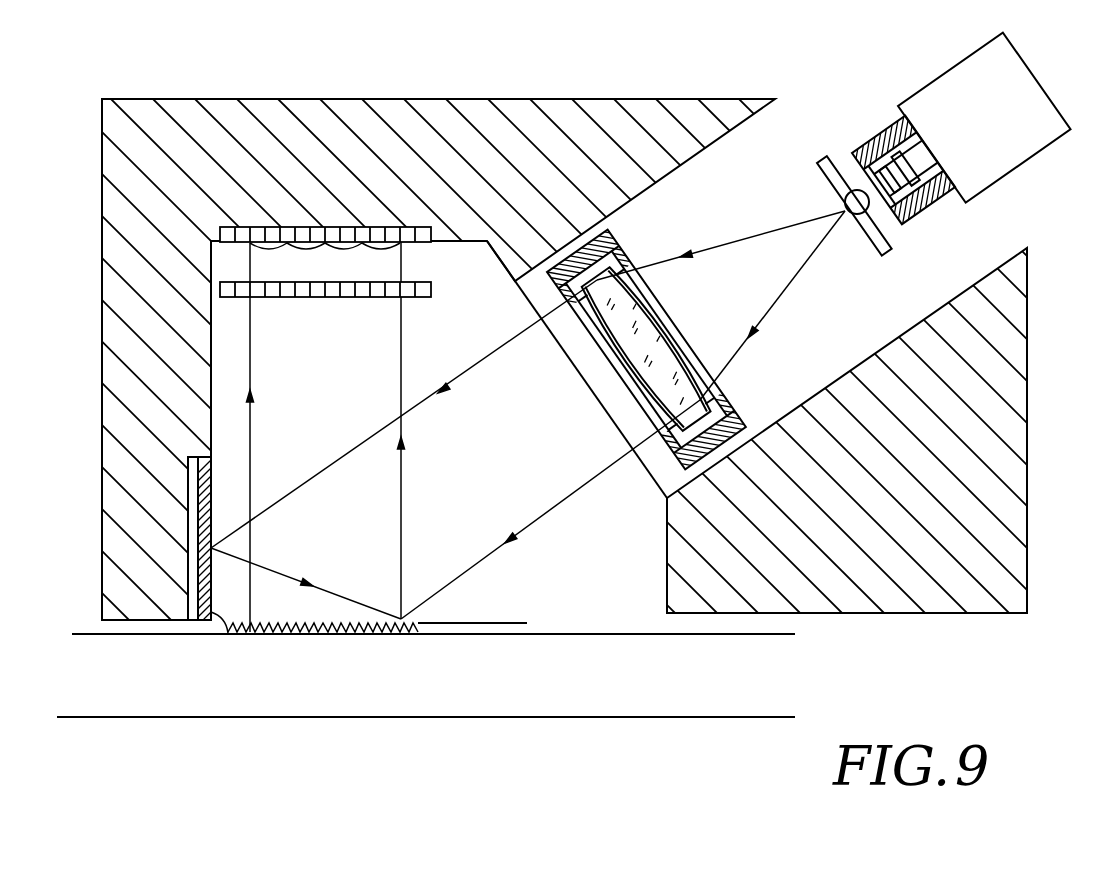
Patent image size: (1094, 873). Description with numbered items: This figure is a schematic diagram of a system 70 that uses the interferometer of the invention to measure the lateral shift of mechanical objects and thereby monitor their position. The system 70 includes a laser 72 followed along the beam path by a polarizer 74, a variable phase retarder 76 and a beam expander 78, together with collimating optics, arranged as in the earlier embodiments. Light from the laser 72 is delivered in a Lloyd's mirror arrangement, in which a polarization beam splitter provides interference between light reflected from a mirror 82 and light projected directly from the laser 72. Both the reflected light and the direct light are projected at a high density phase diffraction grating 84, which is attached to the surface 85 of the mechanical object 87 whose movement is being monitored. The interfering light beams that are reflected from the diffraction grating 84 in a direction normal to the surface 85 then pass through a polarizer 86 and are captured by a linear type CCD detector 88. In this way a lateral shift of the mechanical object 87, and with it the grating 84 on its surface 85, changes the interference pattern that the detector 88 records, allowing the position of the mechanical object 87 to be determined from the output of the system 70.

The system 70 is at (568, 80).
The laser 72 is at (975, 52).
The polarizer 74 is at (862, 152).
The variable phase retarder 76 is at (947, 202).
The beam expander 78 is at (818, 162).
The mirror 82 is at (198, 612).
The high density phase diffraction grating 84 is at (372, 634).
The surface 85 is at (528, 634).
The polarizer 86 is at (432, 289).
The mechanical object 87 is at (314, 695).
The linear type CCD detector 88 is at (255, 228).